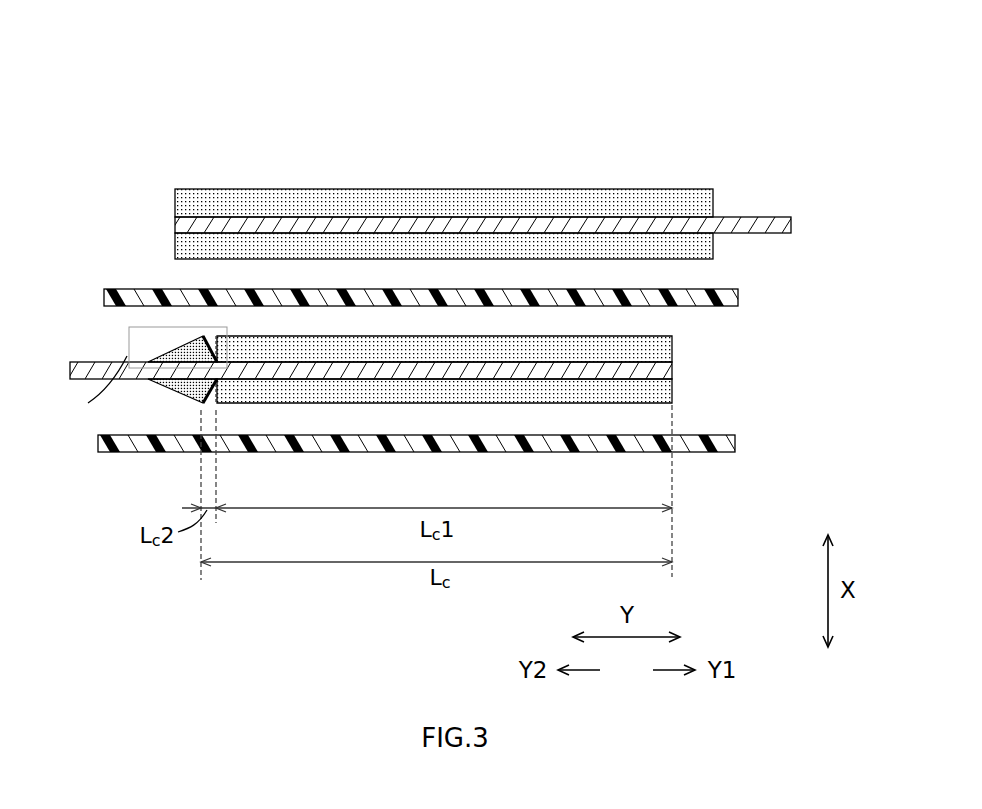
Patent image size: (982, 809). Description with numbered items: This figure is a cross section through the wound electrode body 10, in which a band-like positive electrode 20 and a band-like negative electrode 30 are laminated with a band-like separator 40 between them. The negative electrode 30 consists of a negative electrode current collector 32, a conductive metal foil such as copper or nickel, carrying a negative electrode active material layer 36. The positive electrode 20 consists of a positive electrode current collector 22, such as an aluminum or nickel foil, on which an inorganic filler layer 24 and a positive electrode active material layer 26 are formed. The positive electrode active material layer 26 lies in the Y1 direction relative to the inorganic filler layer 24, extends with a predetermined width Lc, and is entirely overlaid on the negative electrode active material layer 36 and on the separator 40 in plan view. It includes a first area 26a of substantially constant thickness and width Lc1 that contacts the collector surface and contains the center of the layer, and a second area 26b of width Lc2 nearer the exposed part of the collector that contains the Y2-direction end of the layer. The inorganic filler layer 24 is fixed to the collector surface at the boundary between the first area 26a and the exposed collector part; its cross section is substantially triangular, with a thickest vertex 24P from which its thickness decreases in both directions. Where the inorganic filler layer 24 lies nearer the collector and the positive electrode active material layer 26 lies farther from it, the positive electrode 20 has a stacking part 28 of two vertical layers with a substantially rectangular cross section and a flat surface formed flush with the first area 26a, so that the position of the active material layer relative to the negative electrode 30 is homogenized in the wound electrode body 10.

The wound electrode body 10 is at (723, 107).
The negative electrode 30 is at (833, 132).
The negative electrode current collector 32 is at (772, 217).
The negative electrode active material layer 36 is at (713, 248).
The separator 40 is at (738, 297).
The positive electrode 20 is at (835, 340).
The positive electrode current collector 22 is at (672, 370).
The inorganic filler layer 24 is at (188, 348).
The vertex 24P is at (203, 336).
The positive electrode active material layer 26 is at (672, 400).
The first area 26a is at (355, 350).
The second area 26b is at (216, 343).
The stacking part 28 is at (201, 592).